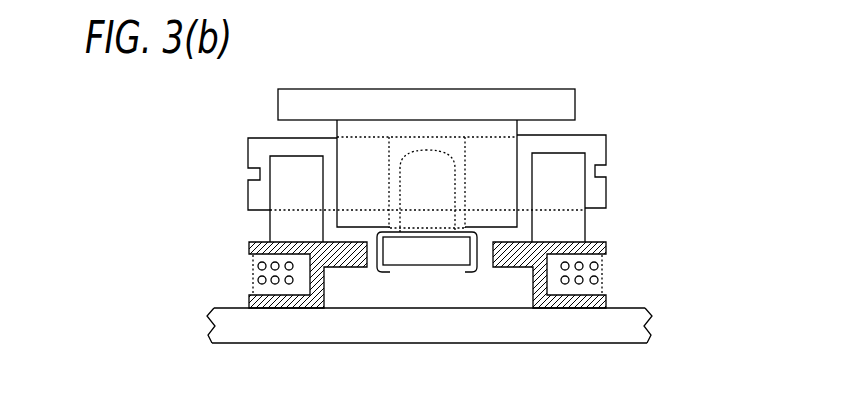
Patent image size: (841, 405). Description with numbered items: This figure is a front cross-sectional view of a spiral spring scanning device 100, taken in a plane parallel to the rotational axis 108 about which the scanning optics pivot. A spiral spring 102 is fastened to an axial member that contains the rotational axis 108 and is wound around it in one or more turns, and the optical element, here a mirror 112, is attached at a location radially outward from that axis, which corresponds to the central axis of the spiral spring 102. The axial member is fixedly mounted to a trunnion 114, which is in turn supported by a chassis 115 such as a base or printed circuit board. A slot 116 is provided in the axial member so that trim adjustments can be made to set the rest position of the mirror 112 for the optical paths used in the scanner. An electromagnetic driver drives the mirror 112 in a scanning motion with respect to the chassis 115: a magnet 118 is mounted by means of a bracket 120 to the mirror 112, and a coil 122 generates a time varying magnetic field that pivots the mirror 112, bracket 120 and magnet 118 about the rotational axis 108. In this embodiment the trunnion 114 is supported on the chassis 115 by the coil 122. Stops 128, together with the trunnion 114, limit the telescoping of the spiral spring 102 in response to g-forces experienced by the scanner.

The spiral spring scanning device 100 is at (367, 347).
The spiral spring 102 is at (336, 150).
The rotational axis 108 is at (257, 173).
The mirror 112 is at (470, 89).
The trunnion 114 is at (268, 225).
The chassis 115 is at (229, 346).
The slot 116 is at (597, 173).
The magnet 118 is at (437, 260).
The bracket 120 is at (390, 272).
The coil 122 is at (600, 277).
The stops 128 is at (340, 262).